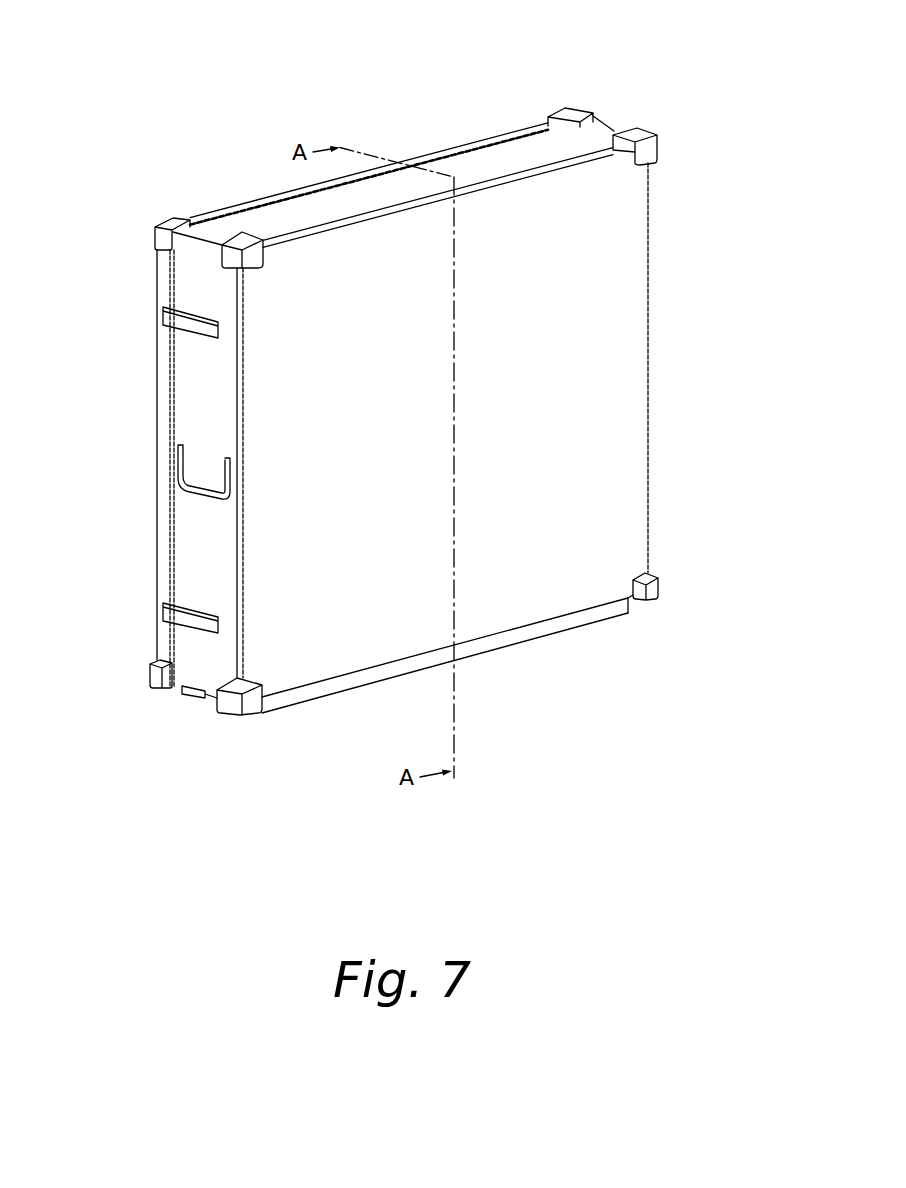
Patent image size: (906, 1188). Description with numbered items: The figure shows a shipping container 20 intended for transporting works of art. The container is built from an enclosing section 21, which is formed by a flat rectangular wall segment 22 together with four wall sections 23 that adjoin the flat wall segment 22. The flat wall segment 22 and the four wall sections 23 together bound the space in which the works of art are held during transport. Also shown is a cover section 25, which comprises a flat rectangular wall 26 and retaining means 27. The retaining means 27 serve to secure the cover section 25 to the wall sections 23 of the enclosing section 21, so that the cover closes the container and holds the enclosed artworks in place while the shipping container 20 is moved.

The shipping container 20 is at (238, 221).
The enclosing section 21 is at (488, 163).
The flat rectangular wall segment 22 is at (632, 398).
The wall sections 23 is at (193, 540).
The cover section 25 is at (160, 385).
The flat rectangular wall 26 is at (165, 262).
The retaining means 27 is at (177, 318).